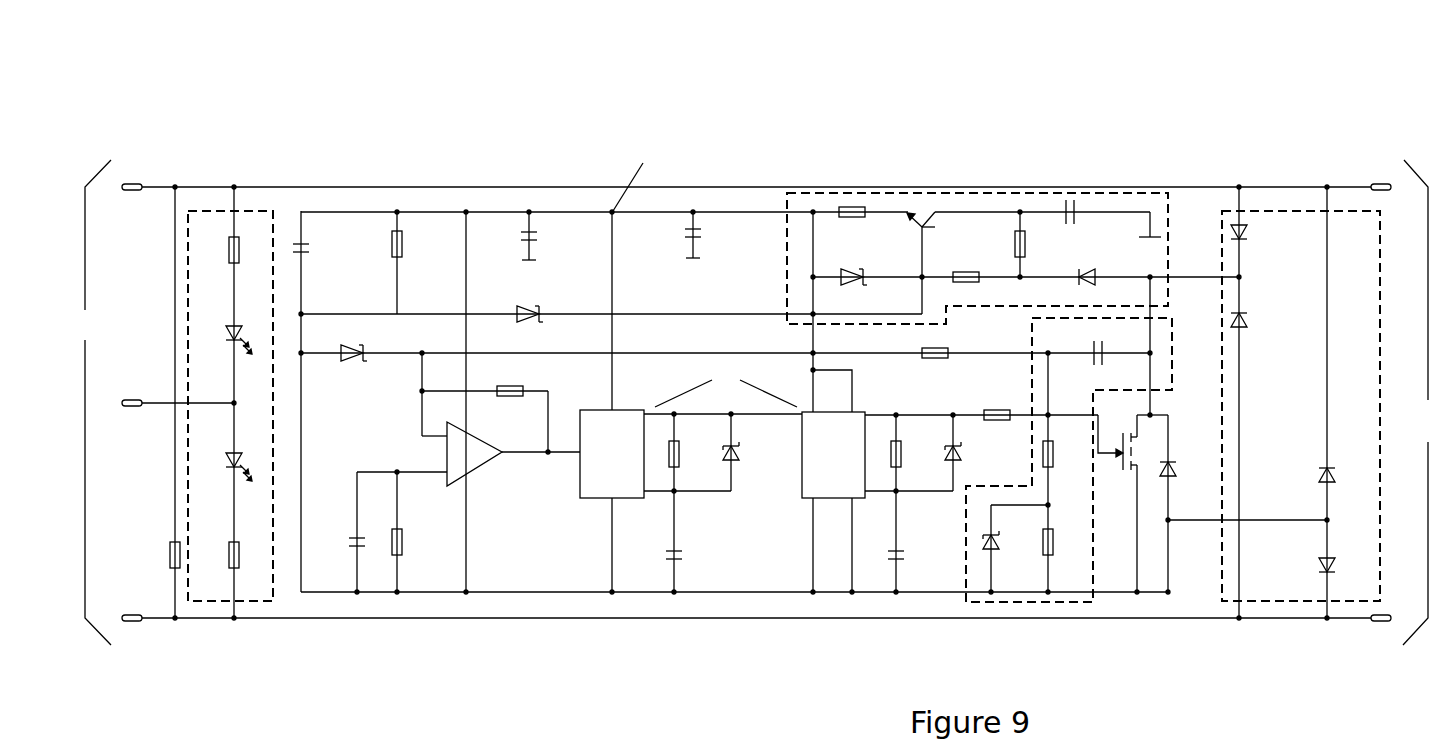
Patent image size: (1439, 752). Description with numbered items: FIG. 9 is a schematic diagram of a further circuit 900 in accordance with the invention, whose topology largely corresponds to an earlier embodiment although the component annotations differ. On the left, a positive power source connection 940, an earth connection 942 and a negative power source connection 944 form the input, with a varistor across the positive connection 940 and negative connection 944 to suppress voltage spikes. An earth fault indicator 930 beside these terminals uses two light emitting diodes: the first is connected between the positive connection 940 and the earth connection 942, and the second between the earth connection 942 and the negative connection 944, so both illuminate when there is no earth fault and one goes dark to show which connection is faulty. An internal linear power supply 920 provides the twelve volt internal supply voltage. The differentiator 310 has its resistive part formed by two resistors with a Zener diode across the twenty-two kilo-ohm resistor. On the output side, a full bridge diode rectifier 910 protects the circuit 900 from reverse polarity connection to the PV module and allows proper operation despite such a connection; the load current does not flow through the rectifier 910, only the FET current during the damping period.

The circuit 900 is at (175, 81).
The positive power source connection 940 is at (143, 185).
The earth connection 942 is at (135, 408).
The negative power source connection 944 is at (138, 623).
The internal linear power supply 920 is at (1170, 215).
The earth fault indicator 930 is at (255, 603).
The differentiator 310 is at (1047, 603).
The full bridge diode rectifier 910 is at (1285, 603).